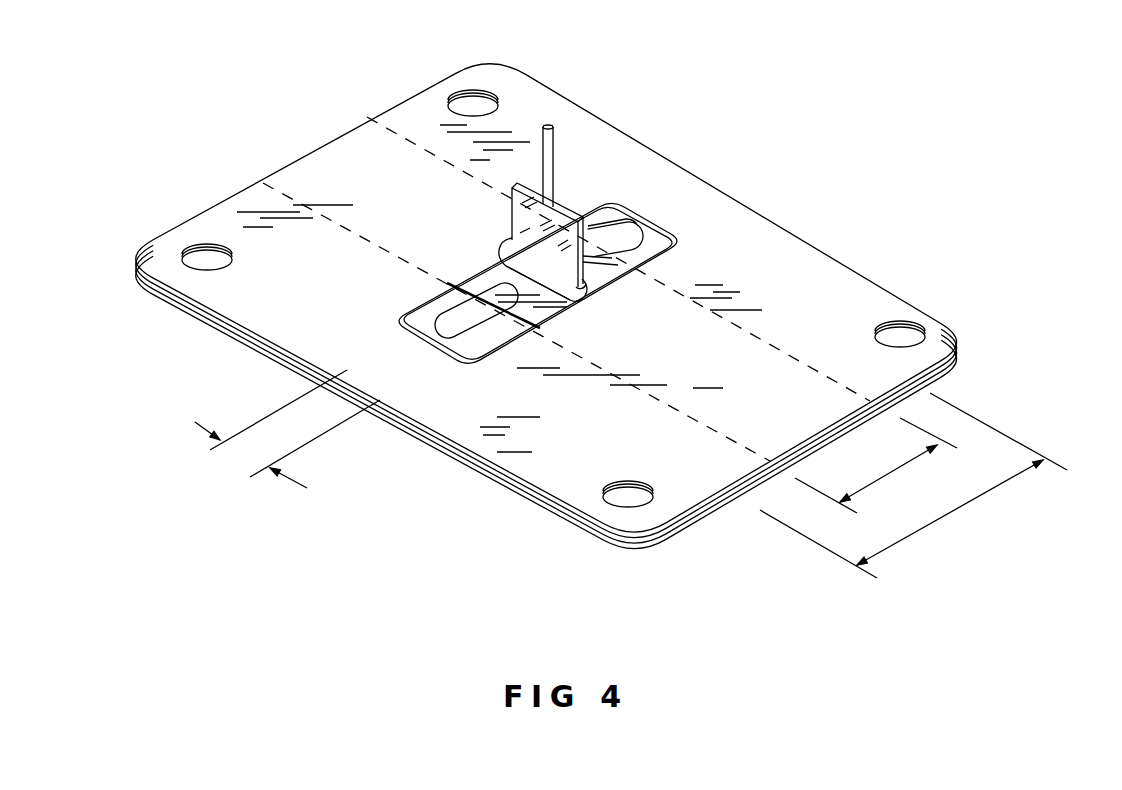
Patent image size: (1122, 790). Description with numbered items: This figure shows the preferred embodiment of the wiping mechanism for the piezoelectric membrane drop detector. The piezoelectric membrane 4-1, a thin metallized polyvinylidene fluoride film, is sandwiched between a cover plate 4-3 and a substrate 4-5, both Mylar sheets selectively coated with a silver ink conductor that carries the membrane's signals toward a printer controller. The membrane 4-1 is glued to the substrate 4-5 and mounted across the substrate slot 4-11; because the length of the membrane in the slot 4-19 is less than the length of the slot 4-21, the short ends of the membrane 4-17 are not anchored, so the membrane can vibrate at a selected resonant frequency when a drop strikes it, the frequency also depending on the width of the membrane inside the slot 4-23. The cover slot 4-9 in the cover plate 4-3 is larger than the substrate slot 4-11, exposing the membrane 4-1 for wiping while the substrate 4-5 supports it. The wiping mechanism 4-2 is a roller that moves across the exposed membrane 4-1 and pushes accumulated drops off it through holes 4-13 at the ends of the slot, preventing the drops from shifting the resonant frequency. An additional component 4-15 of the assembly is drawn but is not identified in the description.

The piezoelectric membrane 4-1 is at (507, 243).
The wiping mechanism 4-2 is at (543, 276).
The cover plate 4-3 is at (243, 300).
The substrate 4-5 is at (660, 245).
The cover slot 4-9 is at (628, 210).
The substrate slot 4-11 is at (597, 232).
The holes 4-13 is at (610, 232).
The upright plate 4-15 is at (530, 213).
The short ends of the membrane 4-17 is at (420, 306).
The length of the membrane in the slot 4-19 is at (893, 470).
The length of the slot 4-21 is at (950, 517).
The width of the membrane inside the slot 4-23 is at (240, 460).